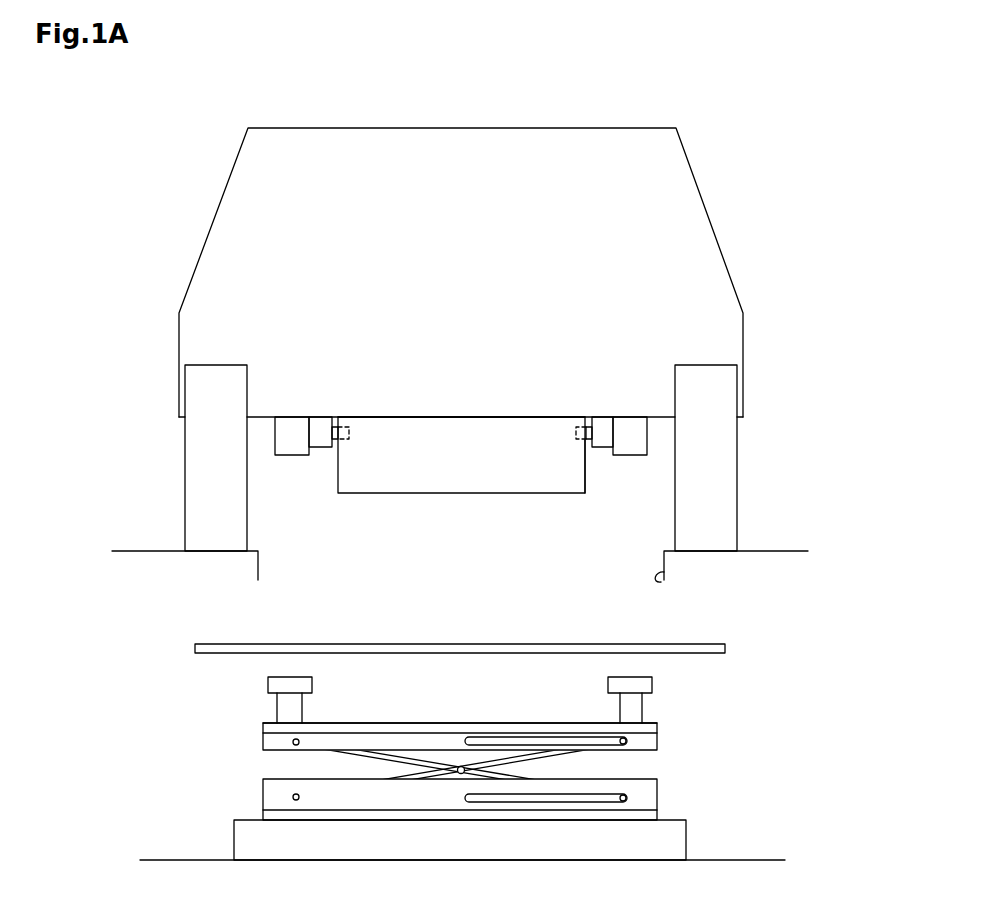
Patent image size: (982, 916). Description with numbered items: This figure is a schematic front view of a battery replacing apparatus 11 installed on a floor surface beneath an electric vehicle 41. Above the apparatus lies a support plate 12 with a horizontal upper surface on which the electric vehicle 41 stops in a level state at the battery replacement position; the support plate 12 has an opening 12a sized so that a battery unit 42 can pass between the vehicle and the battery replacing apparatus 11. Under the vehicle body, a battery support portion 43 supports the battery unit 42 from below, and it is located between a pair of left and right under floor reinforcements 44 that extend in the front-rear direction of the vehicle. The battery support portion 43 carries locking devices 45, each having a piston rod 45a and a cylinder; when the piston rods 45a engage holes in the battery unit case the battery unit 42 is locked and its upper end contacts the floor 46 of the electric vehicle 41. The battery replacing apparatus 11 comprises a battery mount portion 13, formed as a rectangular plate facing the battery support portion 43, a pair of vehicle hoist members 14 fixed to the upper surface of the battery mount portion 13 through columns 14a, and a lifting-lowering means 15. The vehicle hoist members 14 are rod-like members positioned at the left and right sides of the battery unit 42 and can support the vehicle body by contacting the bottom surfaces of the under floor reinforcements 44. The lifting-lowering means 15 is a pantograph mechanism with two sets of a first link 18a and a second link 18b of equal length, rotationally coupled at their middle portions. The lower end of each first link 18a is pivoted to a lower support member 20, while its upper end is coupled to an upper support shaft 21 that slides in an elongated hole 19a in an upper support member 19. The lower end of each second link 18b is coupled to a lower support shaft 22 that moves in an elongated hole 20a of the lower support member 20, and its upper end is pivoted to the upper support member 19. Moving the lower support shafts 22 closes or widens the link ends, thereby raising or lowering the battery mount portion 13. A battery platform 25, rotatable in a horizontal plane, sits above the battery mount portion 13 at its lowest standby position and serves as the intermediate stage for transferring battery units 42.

The battery replacing apparatus 11 is at (768, 761).
The support plate 12 is at (777, 550).
The opening 12a is at (661, 582).
The battery mount portion 13 is at (410, 722).
The vehicle hoist member 14 is at (268, 682).
The column 14a is at (285, 708).
The lifting-lowering means 15 is at (436, 767).
The first link 18a is at (535, 758).
The second link 18b is at (423, 763).
The upper support member 19 is at (658, 742).
The elongated hole 19a is at (512, 737).
The lower support member 20 is at (658, 798).
The elongated hole 20a is at (520, 802).
The upper support shaft 21 is at (620, 739).
The lower support shaft 22 is at (625, 802).
The battery platform 25 is at (727, 648).
The electric vehicle 41 is at (700, 197).
The battery unit 42 is at (532, 483).
The battery support portion 43 is at (600, 484).
The under floor reinforcement 44 is at (292, 457).
The locking device 45 is at (322, 423).
The piston rod 45a is at (349, 433).
The floor 46 is at (455, 418).